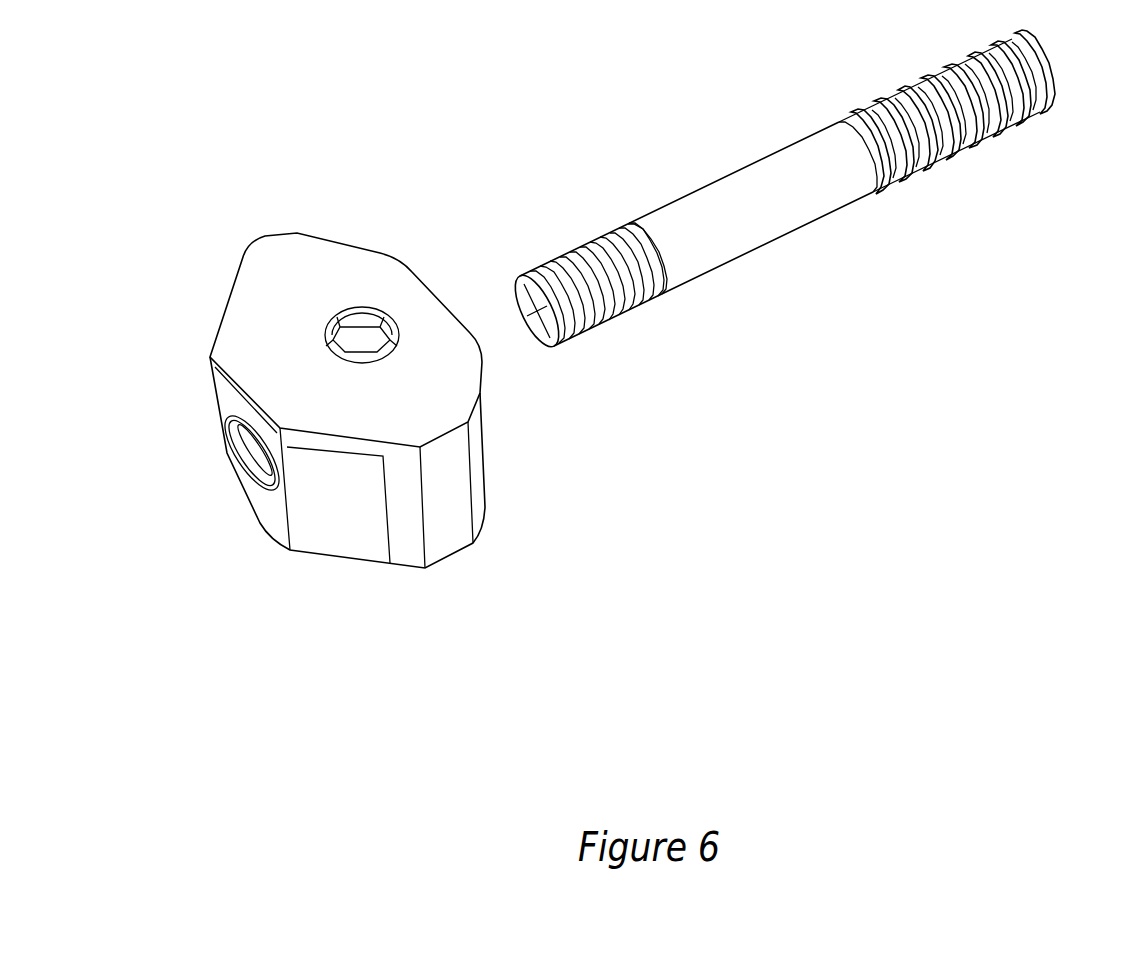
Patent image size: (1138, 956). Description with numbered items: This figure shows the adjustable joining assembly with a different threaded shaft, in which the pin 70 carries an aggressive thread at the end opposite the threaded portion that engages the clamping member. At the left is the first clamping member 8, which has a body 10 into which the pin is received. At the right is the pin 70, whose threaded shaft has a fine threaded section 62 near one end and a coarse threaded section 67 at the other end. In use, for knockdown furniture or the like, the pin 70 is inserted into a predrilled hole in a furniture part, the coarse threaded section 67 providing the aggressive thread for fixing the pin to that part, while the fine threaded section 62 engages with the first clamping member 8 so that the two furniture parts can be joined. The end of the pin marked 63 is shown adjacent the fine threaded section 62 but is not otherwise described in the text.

The first clamping member 8 is at (329, 576).
The body 10 is at (250, 337).
The fine threaded section 62 is at (625, 318).
The screw head end with drive slot 63 is at (518, 300).
The coarse threaded section 67 is at (1000, 128).
The pin 70 is at (782, 238).